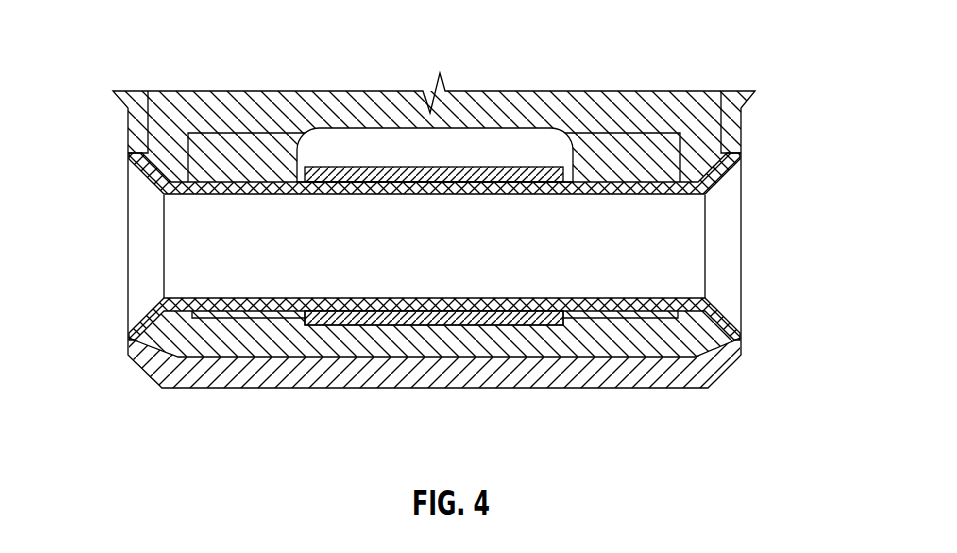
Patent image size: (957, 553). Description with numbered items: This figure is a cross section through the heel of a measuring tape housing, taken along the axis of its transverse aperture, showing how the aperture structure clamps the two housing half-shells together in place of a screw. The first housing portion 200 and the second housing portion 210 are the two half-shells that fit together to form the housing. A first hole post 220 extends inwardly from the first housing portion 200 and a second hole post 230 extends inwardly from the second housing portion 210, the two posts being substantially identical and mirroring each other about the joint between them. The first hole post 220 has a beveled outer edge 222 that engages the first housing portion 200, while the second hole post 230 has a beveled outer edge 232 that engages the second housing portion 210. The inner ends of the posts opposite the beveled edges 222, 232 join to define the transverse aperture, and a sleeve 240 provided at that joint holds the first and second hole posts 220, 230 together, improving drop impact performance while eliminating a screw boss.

The first housing portion 200 is at (142, 132).
The second housing portion 210 is at (733, 113).
The first hole post 220 is at (257, 303).
The beveled outer edge 222 is at (143, 328).
The second hole post 230 is at (617, 300).
The beveled outer edge 232 is at (733, 188).
The sleeve 240 is at (323, 173).